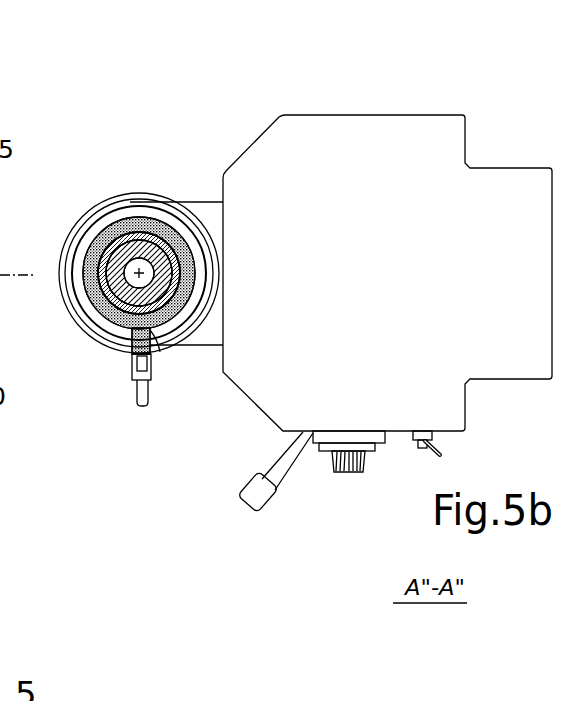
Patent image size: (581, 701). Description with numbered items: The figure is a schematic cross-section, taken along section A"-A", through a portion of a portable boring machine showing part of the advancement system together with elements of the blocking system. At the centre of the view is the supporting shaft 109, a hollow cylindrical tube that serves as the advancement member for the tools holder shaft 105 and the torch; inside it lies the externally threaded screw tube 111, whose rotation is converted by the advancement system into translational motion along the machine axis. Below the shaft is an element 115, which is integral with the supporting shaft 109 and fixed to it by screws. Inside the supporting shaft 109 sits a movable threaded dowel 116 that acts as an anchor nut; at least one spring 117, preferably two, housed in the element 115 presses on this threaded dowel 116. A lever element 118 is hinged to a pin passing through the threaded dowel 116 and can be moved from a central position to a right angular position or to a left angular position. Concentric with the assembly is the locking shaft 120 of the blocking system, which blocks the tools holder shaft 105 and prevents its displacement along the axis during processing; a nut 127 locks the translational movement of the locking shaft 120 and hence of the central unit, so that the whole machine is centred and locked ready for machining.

The tools holder shaft 105 is at (110, 305).
The supporting shaft 109 is at (114, 216).
The screw tube 111 is at (152, 222).
The element 115 is at (128, 350).
The threaded dowel 116 is at (125, 336).
The spring 117 is at (156, 342).
The lever element 118 is at (145, 406).
The locking shaft 120 is at (138, 268).
The nut 127 is at (0, 258).